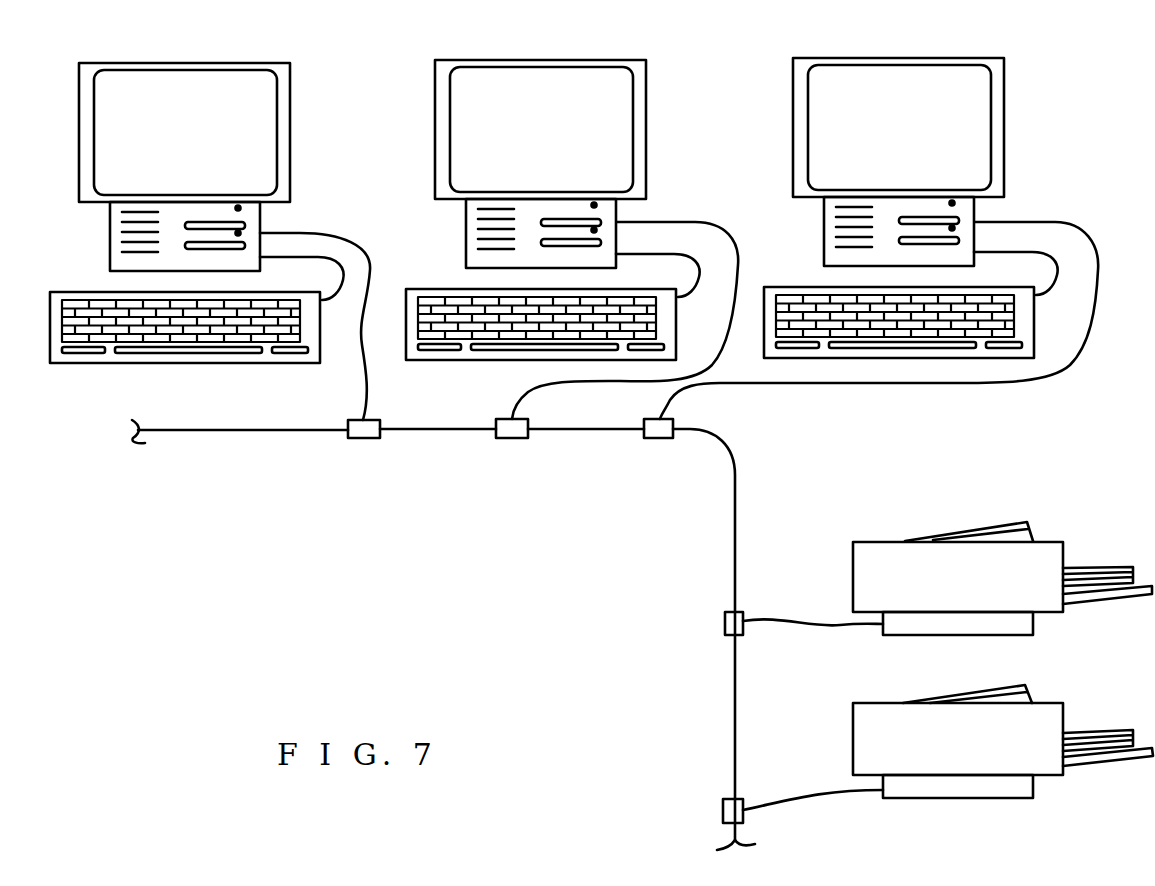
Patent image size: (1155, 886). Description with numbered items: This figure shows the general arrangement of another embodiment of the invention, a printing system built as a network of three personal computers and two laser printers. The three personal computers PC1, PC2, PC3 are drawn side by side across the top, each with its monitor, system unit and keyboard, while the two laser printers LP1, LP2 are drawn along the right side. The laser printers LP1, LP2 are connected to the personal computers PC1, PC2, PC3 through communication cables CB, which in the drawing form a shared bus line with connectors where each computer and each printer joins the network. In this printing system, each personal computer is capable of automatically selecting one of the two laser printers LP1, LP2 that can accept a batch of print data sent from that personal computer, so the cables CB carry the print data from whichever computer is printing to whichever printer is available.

The personal computer PC1 is at (324, 68).
The personal computer PC2 is at (672, 63).
The personal computer PC3 is at (1027, 57).
The communication cable CB is at (735, 497).
The laser printer LP1 is at (1067, 491).
The laser printer LP2 is at (1061, 675).